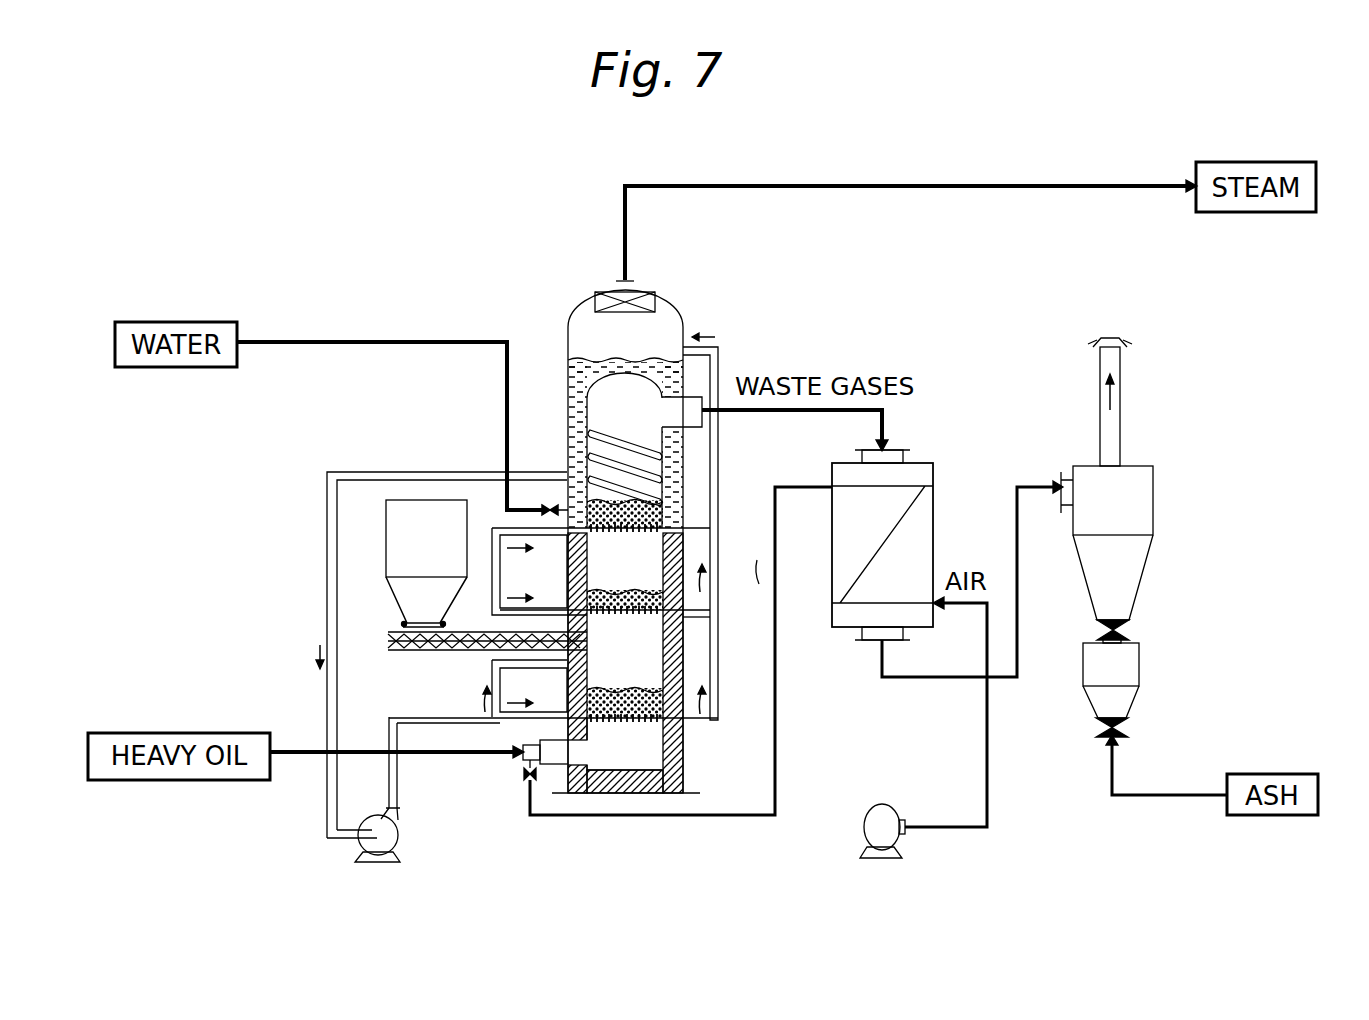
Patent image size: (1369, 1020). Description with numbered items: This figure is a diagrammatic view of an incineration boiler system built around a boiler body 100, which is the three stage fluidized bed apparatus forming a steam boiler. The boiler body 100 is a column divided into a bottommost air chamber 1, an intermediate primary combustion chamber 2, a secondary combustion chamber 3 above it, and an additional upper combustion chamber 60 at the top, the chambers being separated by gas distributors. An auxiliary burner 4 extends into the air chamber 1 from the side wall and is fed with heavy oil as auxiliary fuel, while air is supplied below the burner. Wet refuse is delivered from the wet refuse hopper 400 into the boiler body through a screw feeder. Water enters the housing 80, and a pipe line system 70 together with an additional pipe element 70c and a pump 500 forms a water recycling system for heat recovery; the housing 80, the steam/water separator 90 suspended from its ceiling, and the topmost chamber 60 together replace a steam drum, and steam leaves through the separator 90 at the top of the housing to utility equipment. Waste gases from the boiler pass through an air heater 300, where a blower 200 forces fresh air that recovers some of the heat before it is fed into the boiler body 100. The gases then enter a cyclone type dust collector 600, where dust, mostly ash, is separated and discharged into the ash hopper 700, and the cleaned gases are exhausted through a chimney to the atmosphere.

The air chamber 1 is at (648, 752).
The primary combustion chamber 2 is at (645, 640).
The secondary combustion chamber 3 is at (648, 552).
The auxiliary burner 4 is at (557, 747).
The additional upper combustion chamber 60 is at (601, 398).
The pipe line system 70 is at (782, 455).
The additional pipe element 70c is at (328, 553).
The housing 80 is at (572, 313).
The steam/water separator 90 is at (648, 293).
The boiler body 100 is at (683, 303).
The blower 200 is at (868, 832).
The air heater 300 is at (935, 470).
The wet refuse hopper 400 is at (486, 575).
The pump 500 is at (403, 853).
The dust collector 600 is at (1155, 482).
The ash hopper 700 is at (1142, 660).